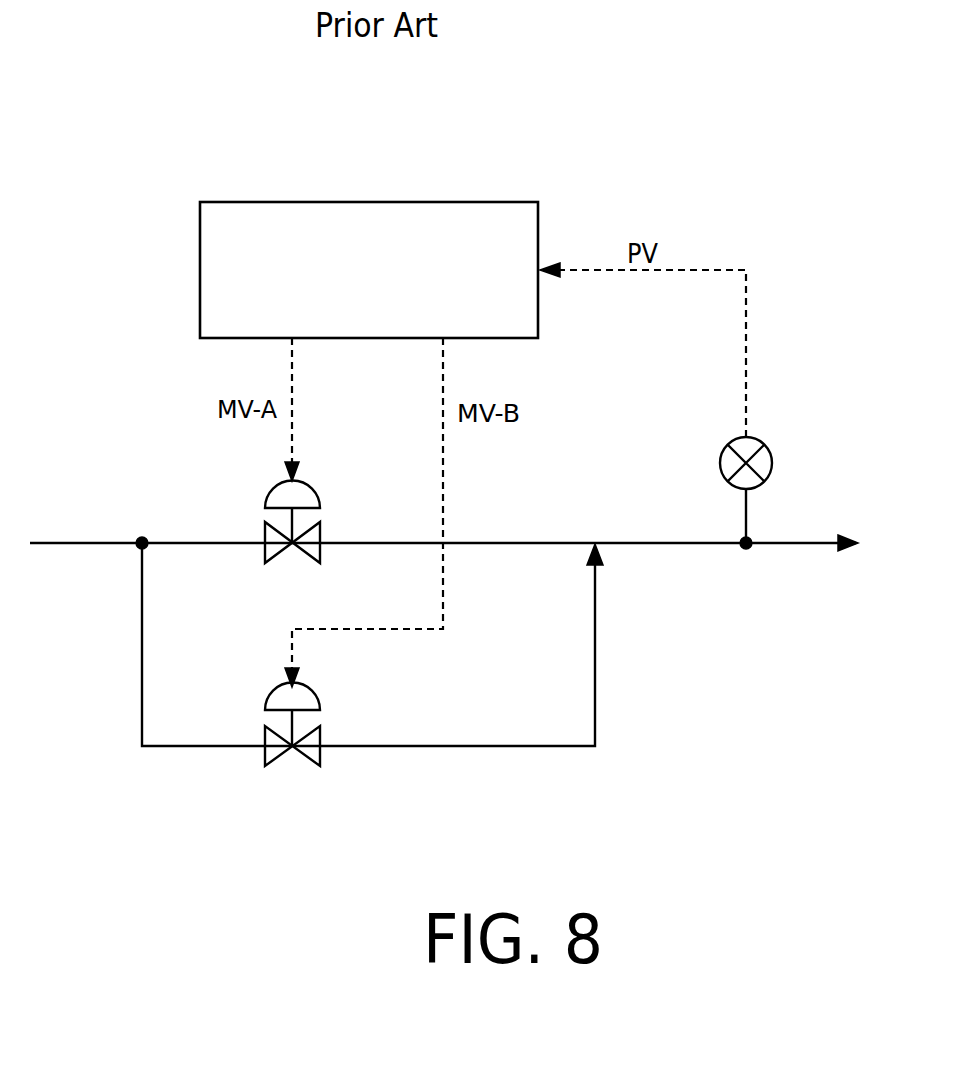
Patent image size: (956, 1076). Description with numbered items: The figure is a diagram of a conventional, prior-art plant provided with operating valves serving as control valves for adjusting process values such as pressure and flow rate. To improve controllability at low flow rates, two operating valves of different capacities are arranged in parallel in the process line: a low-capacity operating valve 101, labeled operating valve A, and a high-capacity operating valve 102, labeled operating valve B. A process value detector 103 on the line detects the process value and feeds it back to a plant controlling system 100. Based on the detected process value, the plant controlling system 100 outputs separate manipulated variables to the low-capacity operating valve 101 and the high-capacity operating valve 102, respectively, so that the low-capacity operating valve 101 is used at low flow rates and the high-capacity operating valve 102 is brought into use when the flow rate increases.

The plant controlling system 100 is at (365, 202).
The low-capacity operating valve 101 is at (268, 490).
The high-capacity operating valve 102 is at (266, 698).
The process value detector 103 is at (722, 455).